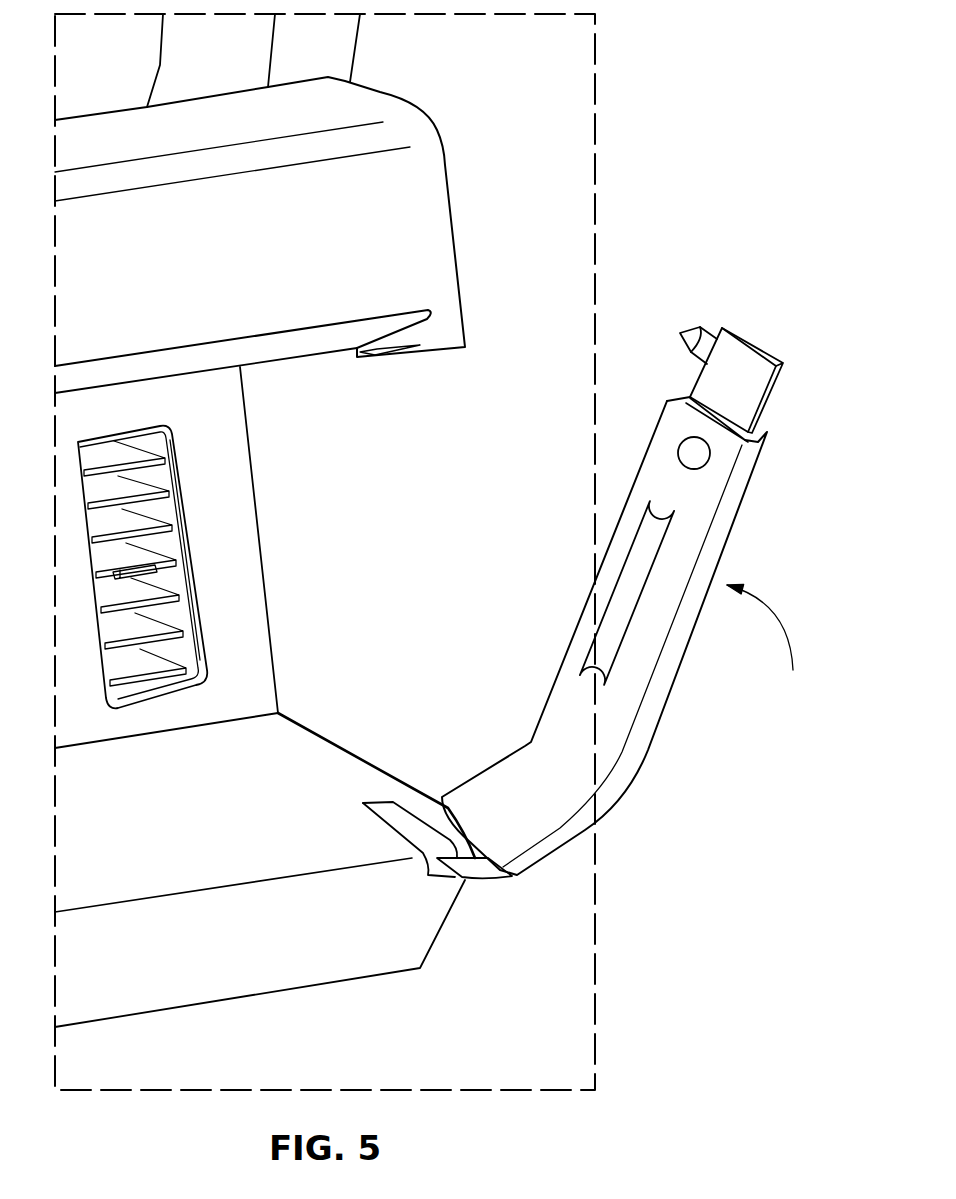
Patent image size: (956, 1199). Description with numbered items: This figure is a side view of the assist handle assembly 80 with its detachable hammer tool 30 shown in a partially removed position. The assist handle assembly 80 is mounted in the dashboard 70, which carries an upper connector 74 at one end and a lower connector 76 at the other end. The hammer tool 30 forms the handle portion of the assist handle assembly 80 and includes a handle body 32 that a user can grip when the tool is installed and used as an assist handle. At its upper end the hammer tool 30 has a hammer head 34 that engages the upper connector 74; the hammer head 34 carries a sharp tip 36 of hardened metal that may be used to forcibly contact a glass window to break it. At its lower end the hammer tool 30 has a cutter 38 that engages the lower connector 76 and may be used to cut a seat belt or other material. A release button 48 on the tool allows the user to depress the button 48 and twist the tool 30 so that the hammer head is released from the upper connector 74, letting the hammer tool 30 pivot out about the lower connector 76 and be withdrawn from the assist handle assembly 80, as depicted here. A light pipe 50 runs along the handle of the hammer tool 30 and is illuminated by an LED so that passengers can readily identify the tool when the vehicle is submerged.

The detachable hammer tool 30 is at (628, 591).
The handle body 32 is at (727, 500).
The hammer head 34 is at (740, 365).
The sharp tip 36 is at (690, 330).
The cutter 38 is at (483, 878).
The release button 48 is at (690, 453).
The light pipe 50 is at (617, 635).
The dashboard 70 is at (420, 213).
The upper connector 74 is at (378, 355).
The lower connector 76 is at (398, 818).
The assist handle assembly 80 is at (768, 646).